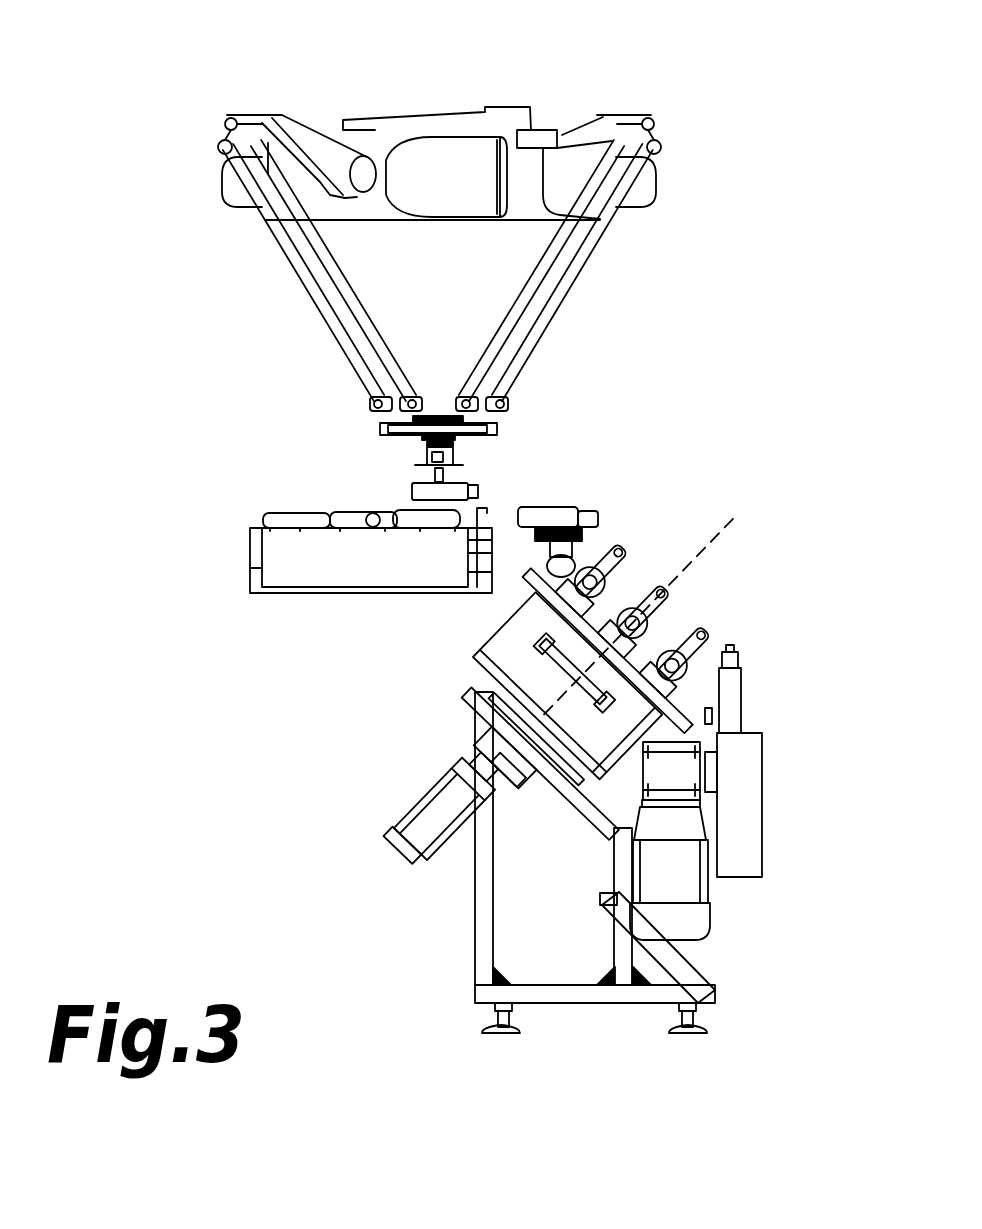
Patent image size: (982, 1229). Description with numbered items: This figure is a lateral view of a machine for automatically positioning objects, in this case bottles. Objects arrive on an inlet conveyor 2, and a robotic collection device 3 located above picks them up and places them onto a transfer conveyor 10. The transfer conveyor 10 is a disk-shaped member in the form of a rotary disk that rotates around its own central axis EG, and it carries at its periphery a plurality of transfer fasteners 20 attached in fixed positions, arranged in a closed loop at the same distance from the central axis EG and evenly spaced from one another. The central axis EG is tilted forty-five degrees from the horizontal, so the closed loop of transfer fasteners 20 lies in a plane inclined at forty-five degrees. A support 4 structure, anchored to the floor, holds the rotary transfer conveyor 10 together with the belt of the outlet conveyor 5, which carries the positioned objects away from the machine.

The robotic collection device 3 is at (382, 113).
The inlet conveyor 2 is at (266, 513).
The support structure 4 is at (484, 913).
The outlet conveyor 5 is at (750, 735).
The central axis EG is at (715, 537).
The transfer conveyor 10 is at (660, 626).
The transfer fasteners 20 is at (707, 648).